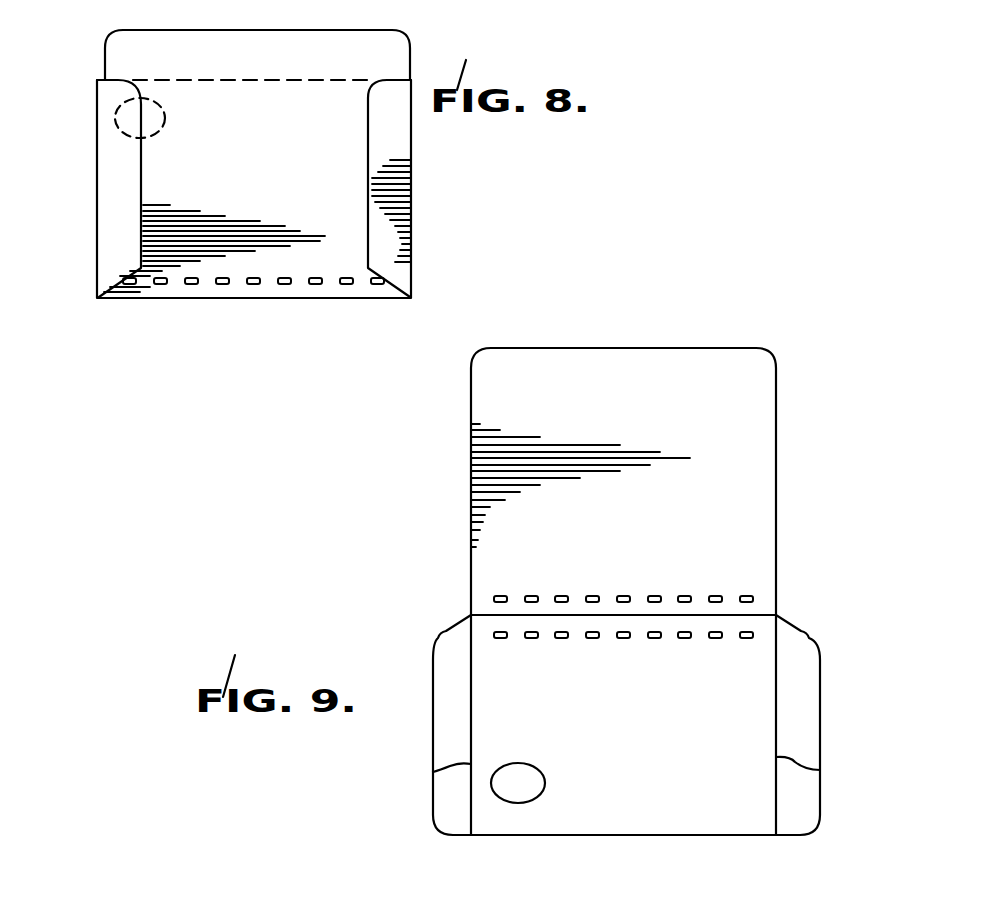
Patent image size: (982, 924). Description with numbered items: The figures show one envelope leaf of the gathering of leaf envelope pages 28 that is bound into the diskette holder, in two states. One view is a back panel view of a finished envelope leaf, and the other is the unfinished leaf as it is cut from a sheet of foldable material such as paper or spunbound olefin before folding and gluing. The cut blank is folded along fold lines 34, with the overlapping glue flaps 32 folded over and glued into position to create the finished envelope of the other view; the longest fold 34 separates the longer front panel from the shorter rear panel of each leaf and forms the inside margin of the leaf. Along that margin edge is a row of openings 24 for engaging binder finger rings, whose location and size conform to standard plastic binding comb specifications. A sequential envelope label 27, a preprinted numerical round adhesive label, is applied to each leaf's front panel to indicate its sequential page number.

In FIG. 8, the openings for engaging binder finger rings 24 is at (257, 285).
In FIG. 9, the openings for engaging binder finger rings 24 is at (559, 597).
In FIG. 8, the sequential envelope label 27 is at (112, 115).
In FIG. 9, the sequential envelope label 27 is at (503, 801).
In FIG. 8, the gathering of leaf envelope pages 28 is at (412, 48).
In FIG. 9, the gathering of leaf envelope pages 28 is at (785, 483).
In FIG. 8, the overlapping glue flap 32 is at (130, 180).
In FIG. 9, the overlapping glue flap 32 is at (434, 748).
In FIG. 9, the fold line 34 is at (753, 610).